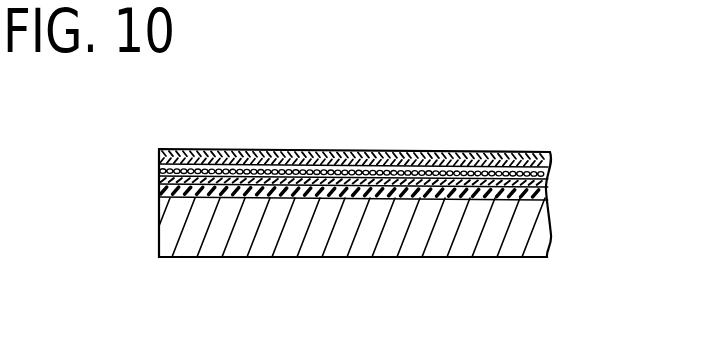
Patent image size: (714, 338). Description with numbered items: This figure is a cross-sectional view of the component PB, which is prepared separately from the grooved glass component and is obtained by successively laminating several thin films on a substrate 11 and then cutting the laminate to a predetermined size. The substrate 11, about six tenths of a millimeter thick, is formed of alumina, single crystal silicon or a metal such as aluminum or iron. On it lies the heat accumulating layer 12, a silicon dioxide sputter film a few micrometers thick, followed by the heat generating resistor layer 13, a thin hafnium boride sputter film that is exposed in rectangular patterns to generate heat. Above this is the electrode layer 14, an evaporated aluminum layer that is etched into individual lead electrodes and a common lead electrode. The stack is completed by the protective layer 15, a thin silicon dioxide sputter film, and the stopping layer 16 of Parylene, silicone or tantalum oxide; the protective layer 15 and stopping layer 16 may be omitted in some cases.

The substrate 11 is at (338, 235).
The heat accumulating layer 12 is at (159, 189).
The heat generating resistor layer 13 is at (547, 185).
The electrode layer 14 is at (159, 171).
The protective layer 15 is at (550, 154).
The stopping layer 16 is at (202, 150).
The component PB is at (453, 134).